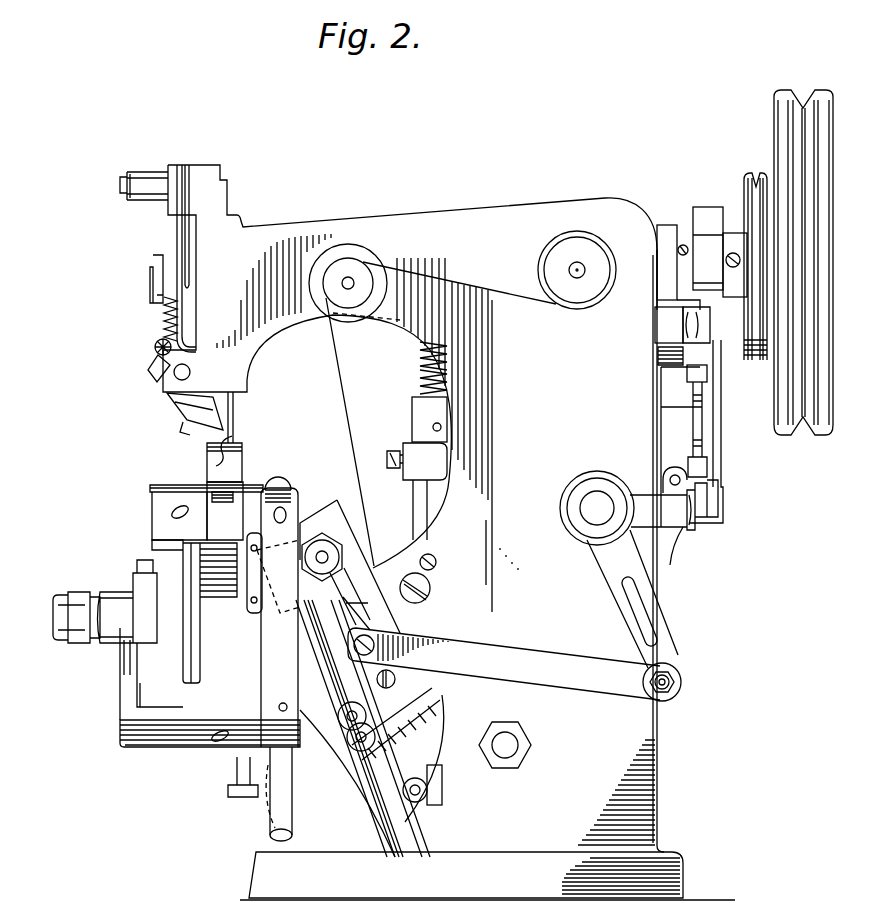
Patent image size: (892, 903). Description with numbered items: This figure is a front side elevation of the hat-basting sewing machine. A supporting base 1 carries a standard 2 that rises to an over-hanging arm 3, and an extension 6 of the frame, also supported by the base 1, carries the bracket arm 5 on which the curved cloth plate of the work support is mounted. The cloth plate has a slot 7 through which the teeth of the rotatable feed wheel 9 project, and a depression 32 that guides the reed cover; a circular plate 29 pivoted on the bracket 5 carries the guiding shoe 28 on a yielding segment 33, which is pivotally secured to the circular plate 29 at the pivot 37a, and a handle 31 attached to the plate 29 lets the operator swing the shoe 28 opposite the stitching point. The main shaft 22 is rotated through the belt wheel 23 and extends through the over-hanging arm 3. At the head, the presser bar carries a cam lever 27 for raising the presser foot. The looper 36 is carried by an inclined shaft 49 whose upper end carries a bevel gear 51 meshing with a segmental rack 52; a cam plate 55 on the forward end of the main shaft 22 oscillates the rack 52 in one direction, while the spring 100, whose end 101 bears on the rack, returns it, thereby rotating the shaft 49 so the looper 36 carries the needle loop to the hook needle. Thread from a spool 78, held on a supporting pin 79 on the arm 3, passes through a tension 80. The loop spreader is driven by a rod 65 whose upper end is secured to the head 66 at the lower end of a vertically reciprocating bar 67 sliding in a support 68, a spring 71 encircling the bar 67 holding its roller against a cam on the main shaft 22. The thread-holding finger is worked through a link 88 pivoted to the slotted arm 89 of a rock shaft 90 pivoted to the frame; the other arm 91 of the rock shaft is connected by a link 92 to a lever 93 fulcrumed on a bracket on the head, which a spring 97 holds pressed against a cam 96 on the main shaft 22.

The supporting base 1 is at (487, 876).
The standard 2 is at (482, 553).
The over-hanging arm 3 is at (388, 366).
The bracket arm 5 is at (168, 560).
The extension 6 is at (370, 695).
The slot 7 is at (192, 492).
The feed wheel 9 is at (240, 477).
The main shaft 22 is at (655, 245).
The belt wheel 23 is at (778, 148).
The cam lever 27 is at (238, 458).
The guiding shoe 28 is at (252, 612).
The circular plate 29 is at (210, 715).
The handle 31 is at (291, 800).
The depression 32 is at (225, 511).
The yielding segment 33 is at (328, 617).
The looper 36 is at (227, 413).
The pivot of yielding segment 37a is at (279, 708).
The inclined shaft 49 is at (155, 343).
The bevel gear 51 is at (152, 358).
The segmental rack 52 is at (163, 313).
The cam plate 55 is at (155, 287).
The rod 65 is at (425, 514).
The head 66 is at (415, 476).
The vertically reciprocating bar 67 is at (421, 388).
The support 68 is at (413, 423).
The spring 71 is at (421, 362).
The spool 78 is at (562, 253).
The supporting pin 79 is at (582, 266).
The tension 80 is at (367, 265).
The link 88 is at (497, 656).
The slotted arm 89 is at (636, 584).
The rock shaft 90 is at (600, 500).
The arm 91 is at (680, 527).
The link 92 is at (704, 441).
The lever 93 is at (665, 336).
The cam 96 is at (671, 228).
The spring 97 is at (696, 369).
The spring 100 is at (182, 168).
The end of spring 101 is at (183, 234).